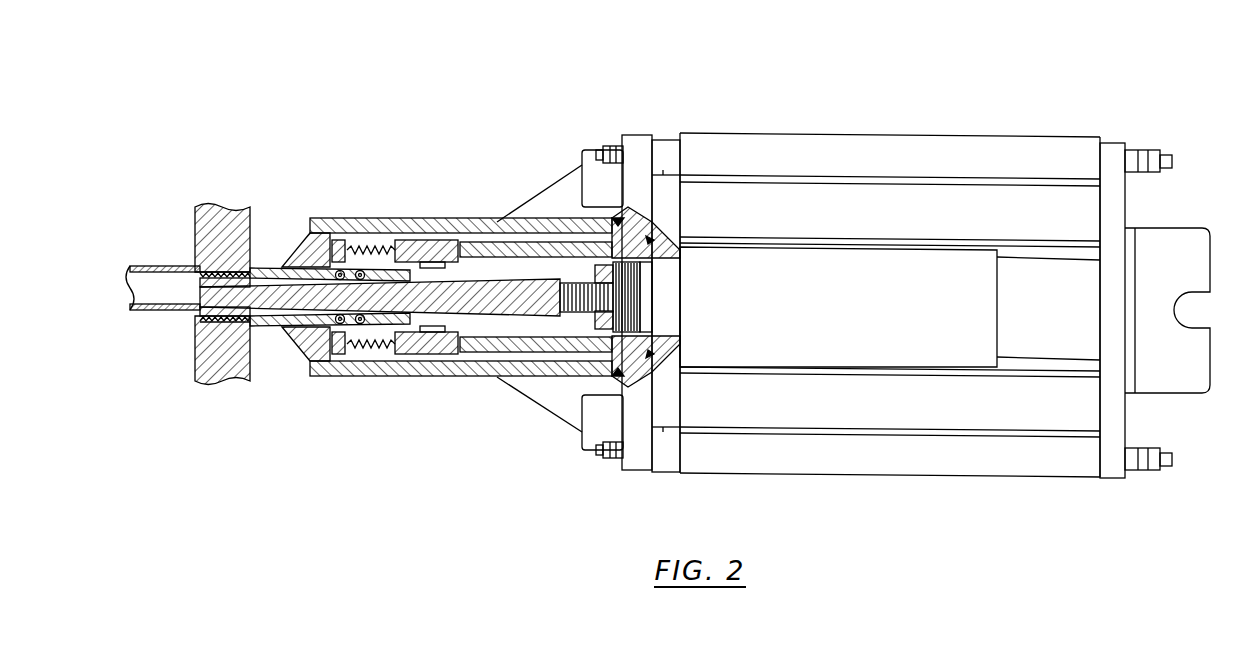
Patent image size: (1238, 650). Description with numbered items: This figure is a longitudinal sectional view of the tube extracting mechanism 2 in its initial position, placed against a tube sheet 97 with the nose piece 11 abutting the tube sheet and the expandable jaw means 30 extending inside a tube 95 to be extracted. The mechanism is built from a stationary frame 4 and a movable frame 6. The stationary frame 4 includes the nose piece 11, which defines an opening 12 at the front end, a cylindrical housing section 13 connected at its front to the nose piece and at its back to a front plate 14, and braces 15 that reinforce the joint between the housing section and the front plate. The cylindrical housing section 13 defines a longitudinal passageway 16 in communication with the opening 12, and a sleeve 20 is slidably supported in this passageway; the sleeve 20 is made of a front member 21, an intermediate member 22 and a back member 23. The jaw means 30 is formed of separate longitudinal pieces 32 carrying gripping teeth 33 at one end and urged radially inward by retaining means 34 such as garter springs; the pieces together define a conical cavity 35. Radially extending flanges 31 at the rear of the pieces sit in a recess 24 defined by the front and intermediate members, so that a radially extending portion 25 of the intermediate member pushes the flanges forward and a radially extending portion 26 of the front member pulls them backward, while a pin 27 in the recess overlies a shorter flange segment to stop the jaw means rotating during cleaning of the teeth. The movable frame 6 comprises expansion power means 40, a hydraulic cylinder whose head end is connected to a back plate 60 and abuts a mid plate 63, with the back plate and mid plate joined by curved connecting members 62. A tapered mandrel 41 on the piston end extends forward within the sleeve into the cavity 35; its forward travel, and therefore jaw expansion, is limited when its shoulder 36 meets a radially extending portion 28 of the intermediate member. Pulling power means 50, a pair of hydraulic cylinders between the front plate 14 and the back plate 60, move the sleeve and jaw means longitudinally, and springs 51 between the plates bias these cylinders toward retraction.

The tube extracting mechanism 2 is at (603, 98).
The stationary frame 4 is at (373, 145).
The movable frame 6 is at (910, 110).
The nose piece 11 is at (262, 325).
The opening 12 is at (262, 313).
The cylindrical housing section 13 is at (473, 377).
The front plate 14 is at (630, 470).
The braces 15 is at (563, 433).
The passageway 16 is at (482, 277).
The sleeve 20 is at (546, 224).
The front member 21 is at (320, 246).
The intermediate member 22 is at (360, 240).
The back member 23 is at (458, 240).
The recess 24 is at (360, 335).
The radially extending portion 25 is at (392, 240).
The radially extending portion 26 is at (425, 335).
The pin 27 is at (381, 240).
The radially extending portion 28 is at (448, 232).
The expandable jaw means 30 is at (268, 280).
The flanges 31 is at (396, 335).
The pieces 32 is at (206, 276).
The gripping teeth 33 is at (228, 280).
The retaining means 34 is at (345, 322).
The cavity 35 is at (190, 314).
The shoulder 36 is at (590, 326).
The expansion power means 40 is at (838, 307).
The mandrel 41 is at (465, 340).
The pulling power means 50 is at (657, 178).
The springs 51 is at (926, 305).
The back plate 60 is at (1118, 213).
The connecting members 62 is at (890, 305).
The mid plate 63 is at (668, 203).
The tube 95 is at (138, 270).
The tube sheet 97 is at (196, 225).